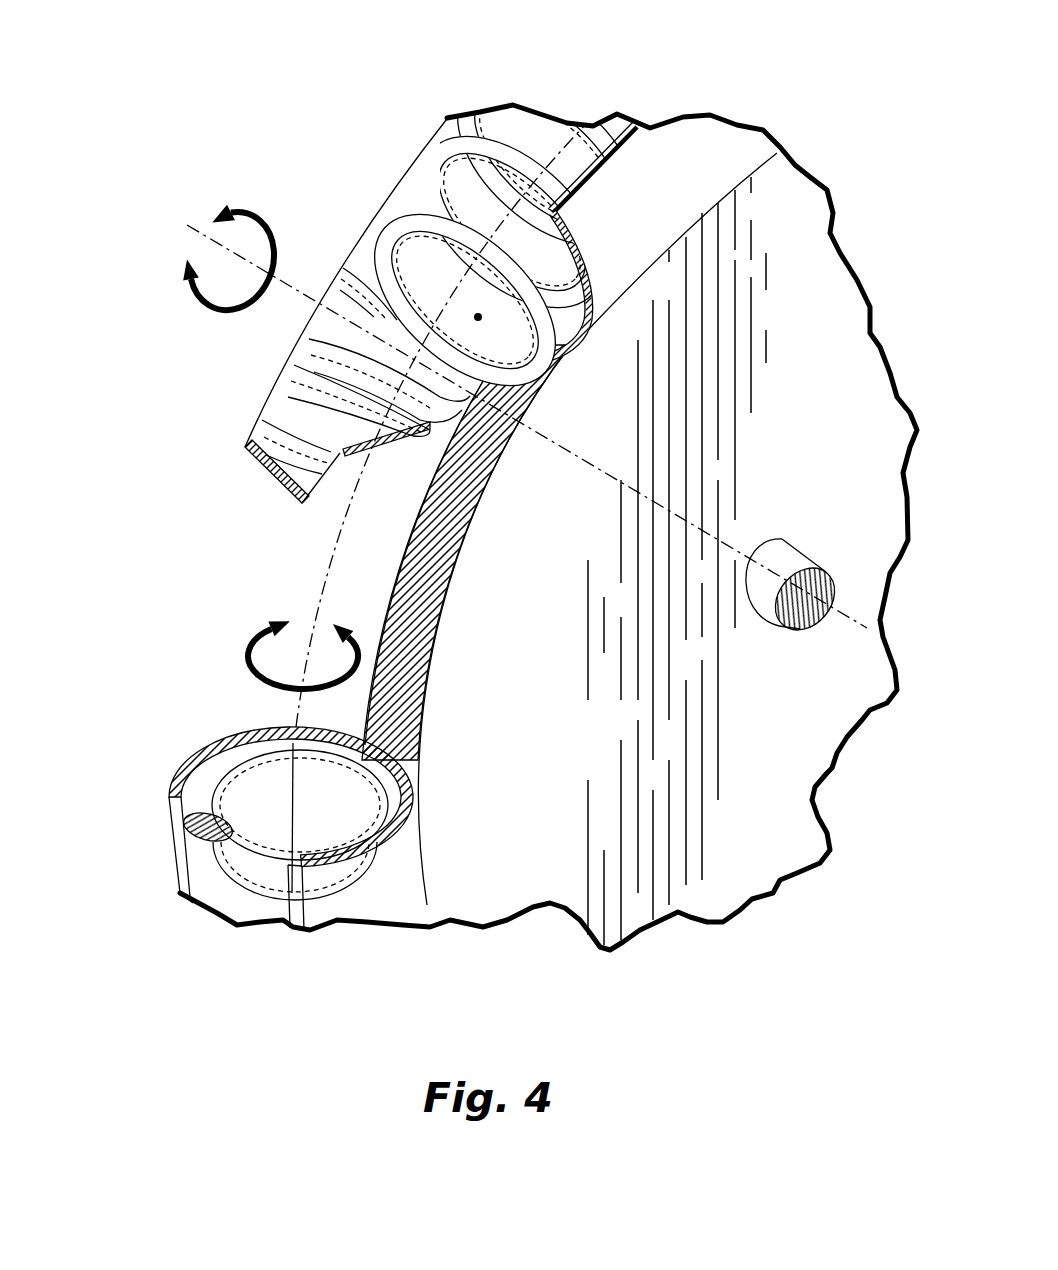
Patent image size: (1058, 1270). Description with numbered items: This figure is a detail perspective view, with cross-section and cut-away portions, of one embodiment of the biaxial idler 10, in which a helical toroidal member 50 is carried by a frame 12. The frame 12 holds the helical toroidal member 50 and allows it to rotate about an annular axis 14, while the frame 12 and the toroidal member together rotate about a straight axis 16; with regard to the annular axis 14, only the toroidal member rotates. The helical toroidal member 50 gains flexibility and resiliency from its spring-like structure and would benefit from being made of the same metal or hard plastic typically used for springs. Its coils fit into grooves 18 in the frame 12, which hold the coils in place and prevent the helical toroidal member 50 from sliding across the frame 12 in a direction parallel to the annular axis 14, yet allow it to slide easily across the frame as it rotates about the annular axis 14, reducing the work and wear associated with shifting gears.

The biaxial idler 10 is at (197, 583).
The frame 12 is at (350, 243).
The annular axis 14 is at (293, 708).
The straight axis 16 is at (290, 282).
The grooves 18 is at (300, 383).
The helical toroidal member 50 is at (425, 173).